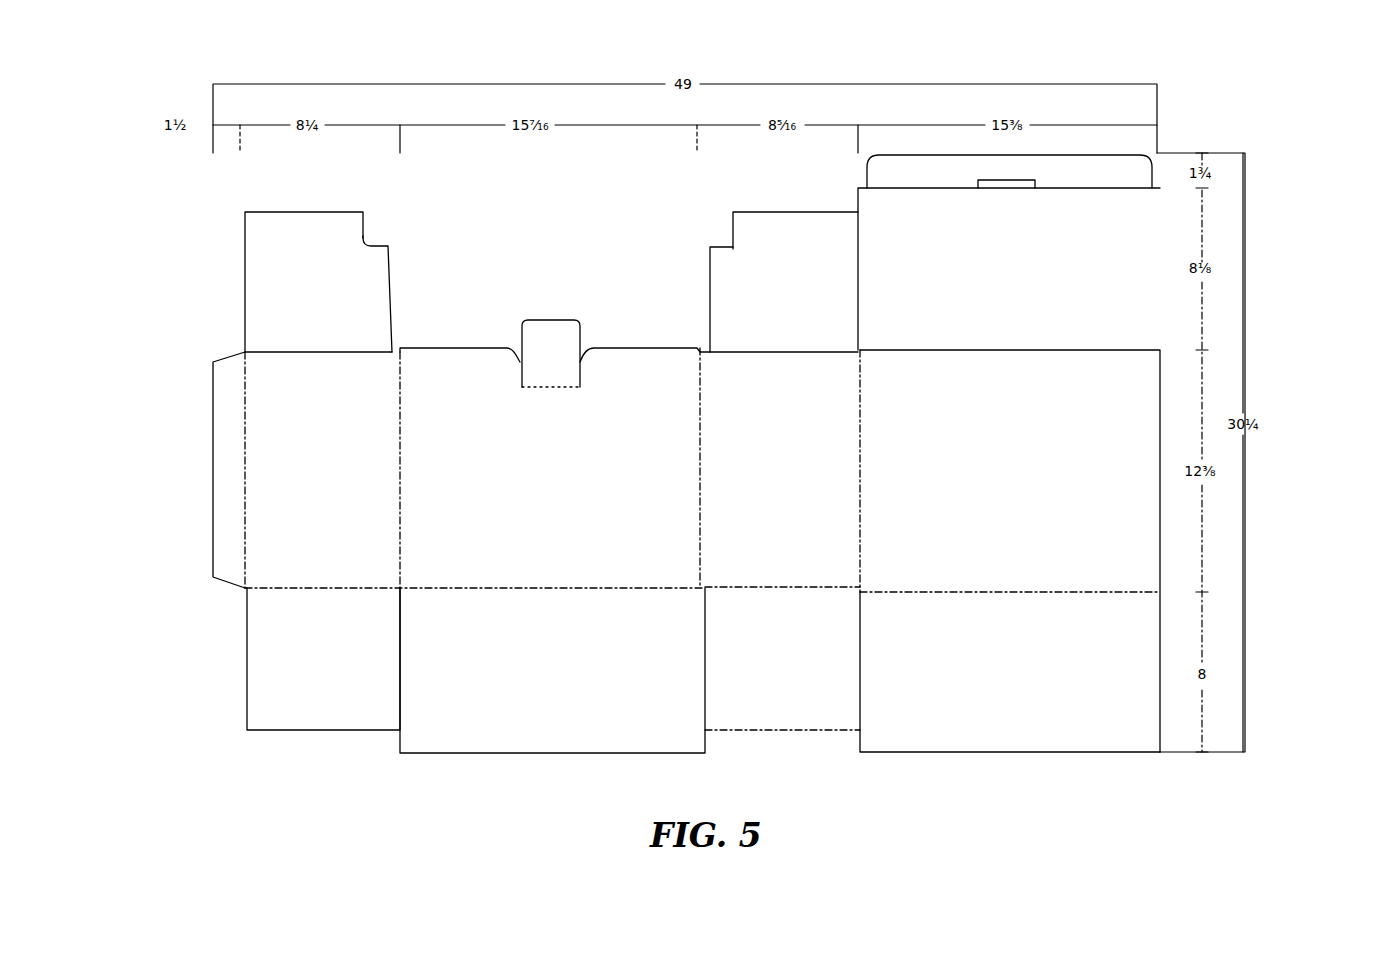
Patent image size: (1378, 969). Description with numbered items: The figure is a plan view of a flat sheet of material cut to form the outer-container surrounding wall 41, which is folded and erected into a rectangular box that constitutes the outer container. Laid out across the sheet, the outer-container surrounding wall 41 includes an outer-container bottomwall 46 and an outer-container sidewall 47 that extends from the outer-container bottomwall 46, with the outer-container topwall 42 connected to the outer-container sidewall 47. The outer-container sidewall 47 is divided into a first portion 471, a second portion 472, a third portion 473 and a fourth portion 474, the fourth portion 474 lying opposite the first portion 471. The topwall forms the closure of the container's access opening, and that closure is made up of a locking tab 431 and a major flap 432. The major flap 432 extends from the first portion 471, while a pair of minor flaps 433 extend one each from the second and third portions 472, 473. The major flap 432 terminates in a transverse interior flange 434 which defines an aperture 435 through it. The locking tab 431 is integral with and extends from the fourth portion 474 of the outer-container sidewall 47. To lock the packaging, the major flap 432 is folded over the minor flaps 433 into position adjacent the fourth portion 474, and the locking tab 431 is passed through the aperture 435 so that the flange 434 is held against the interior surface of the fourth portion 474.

The outer-container surrounding wall 41 is at (192, 645).
The outer-container topwall 42 is at (263, 273).
The locking tab 431 is at (548, 330).
The major flap 432 is at (1140, 233).
The minor flaps 433 is at (375, 258).
The transverse interior flange 434 is at (1062, 165).
The aperture 435 is at (990, 180).
The outer-container bottomwall 46 is at (453, 722).
The outer-container sidewall 47 is at (268, 540).
The first portion of outer-container sidewall 471 is at (1012, 405).
The second portion of outer-container sidewall 472 is at (330, 407).
The third portion of outer-container sidewall 473 is at (810, 404).
The fourth portion of outer-container sidewall 474 is at (598, 507).